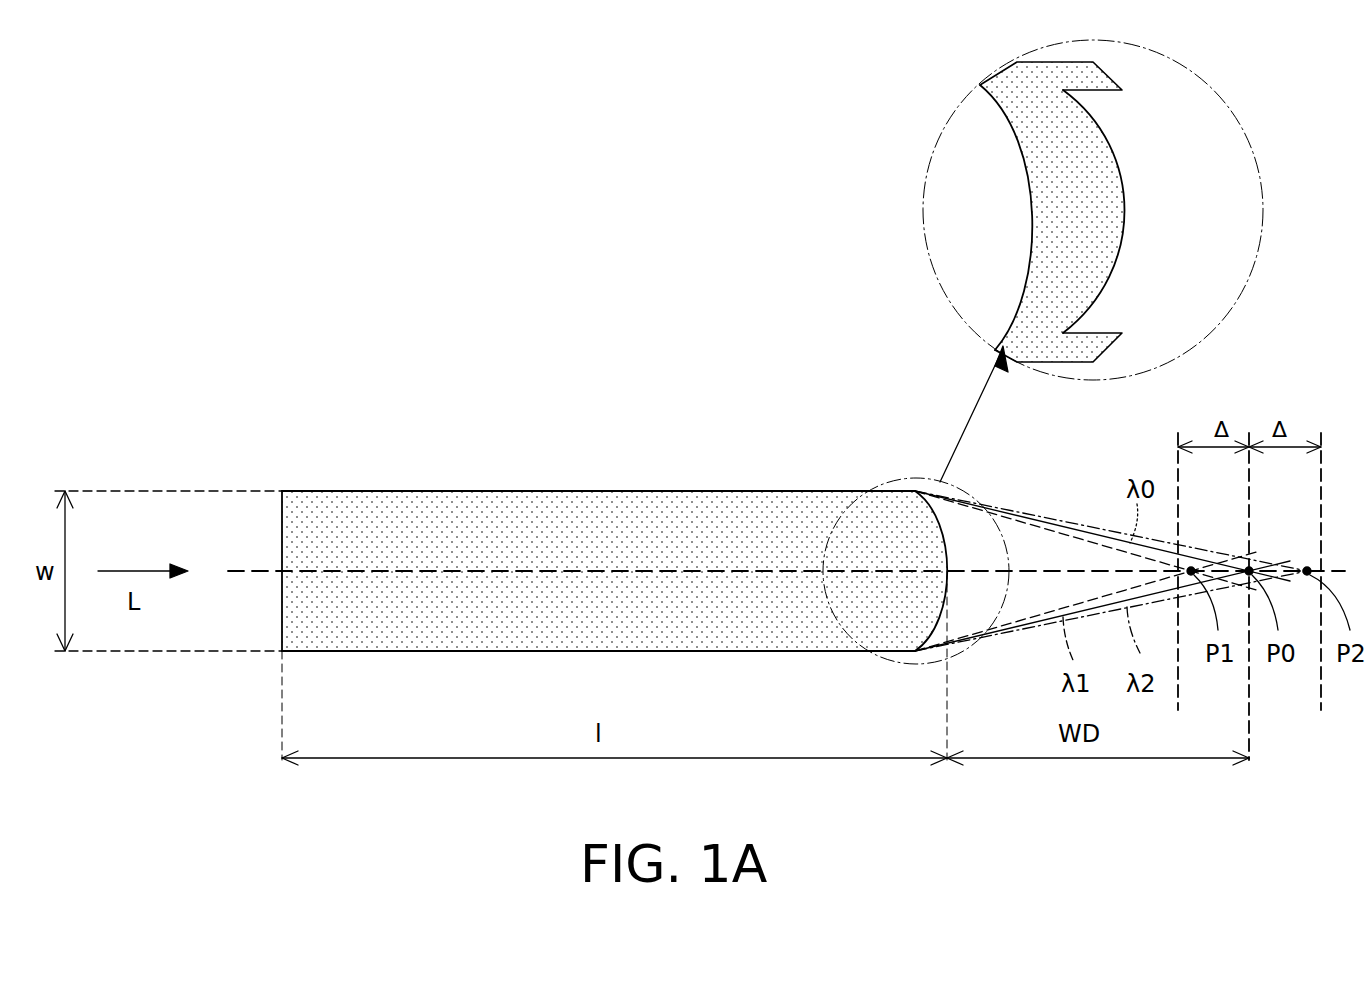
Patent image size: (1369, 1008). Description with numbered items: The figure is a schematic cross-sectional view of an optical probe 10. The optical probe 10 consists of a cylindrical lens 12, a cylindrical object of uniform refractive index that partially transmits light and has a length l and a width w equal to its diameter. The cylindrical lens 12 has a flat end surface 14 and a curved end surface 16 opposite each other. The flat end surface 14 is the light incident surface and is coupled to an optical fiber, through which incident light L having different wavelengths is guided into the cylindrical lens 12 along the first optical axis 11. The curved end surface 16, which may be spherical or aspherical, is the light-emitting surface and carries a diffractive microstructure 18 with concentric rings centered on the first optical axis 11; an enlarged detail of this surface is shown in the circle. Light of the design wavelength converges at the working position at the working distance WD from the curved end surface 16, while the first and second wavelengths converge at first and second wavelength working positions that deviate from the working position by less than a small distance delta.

The optical probe 10 is at (248, 375).
The first optical axis 11 is at (258, 568).
The cylindrical lens 12 is at (555, 491).
The flat end surface 14 is at (280, 520).
The curved end surface 16 is at (947, 542).
The diffractive microstructure 18 is at (1102, 242).